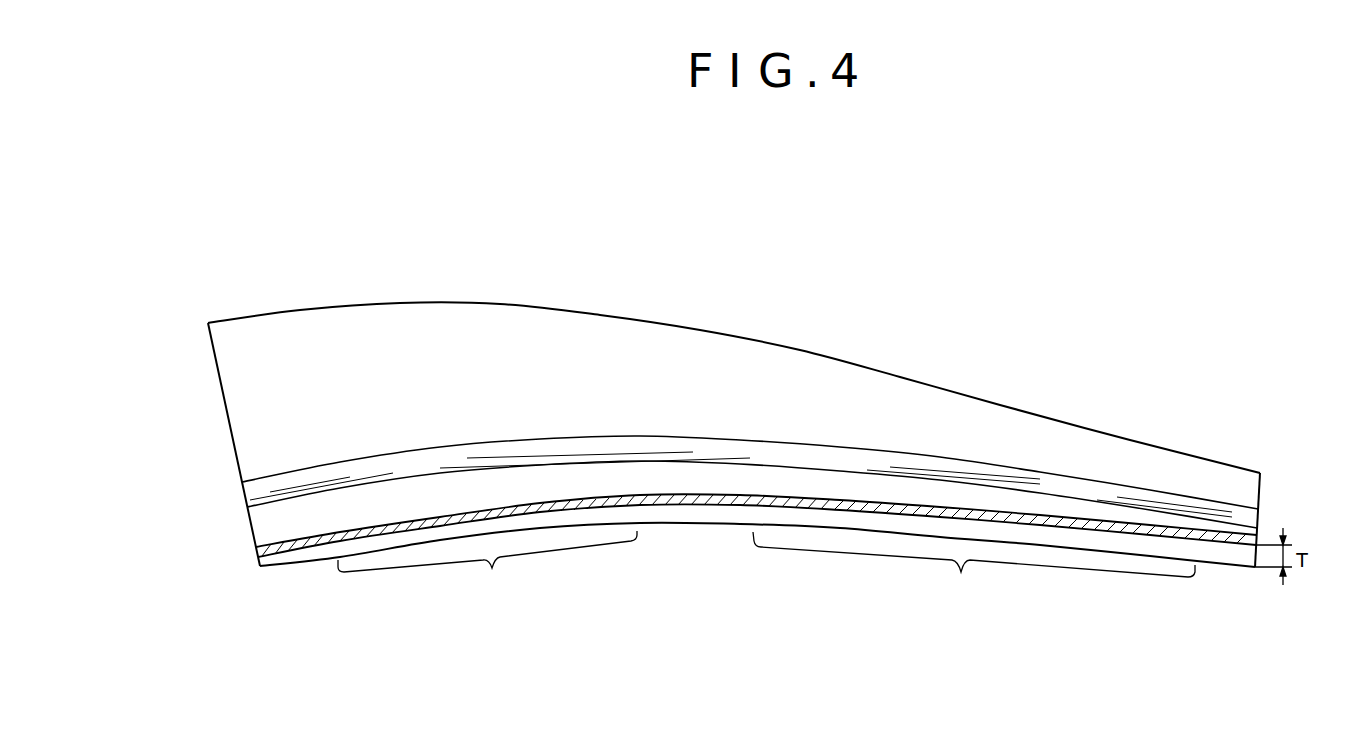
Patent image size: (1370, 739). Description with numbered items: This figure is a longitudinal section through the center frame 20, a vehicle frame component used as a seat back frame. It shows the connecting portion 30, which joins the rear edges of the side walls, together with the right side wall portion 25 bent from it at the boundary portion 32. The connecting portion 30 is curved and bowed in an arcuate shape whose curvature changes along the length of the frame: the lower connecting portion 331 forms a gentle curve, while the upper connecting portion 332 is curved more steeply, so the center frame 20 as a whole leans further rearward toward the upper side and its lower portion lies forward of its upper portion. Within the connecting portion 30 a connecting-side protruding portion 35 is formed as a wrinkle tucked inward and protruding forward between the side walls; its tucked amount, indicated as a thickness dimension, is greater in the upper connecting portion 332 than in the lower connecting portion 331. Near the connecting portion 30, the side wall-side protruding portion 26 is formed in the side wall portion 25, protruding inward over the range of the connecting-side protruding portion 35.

The center frame 20 is at (734, 427).
The side wall portion 25 is at (833, 382).
The side wall-side protruding portion 26 is at (1097, 492).
The connecting portion 30 is at (756, 573).
The boundary portion 32 is at (742, 525).
The connecting-side protruding portion 35 is at (673, 505).
The lower connecting portion 331 is at (487, 566).
The upper connecting portion 332 is at (974, 567).